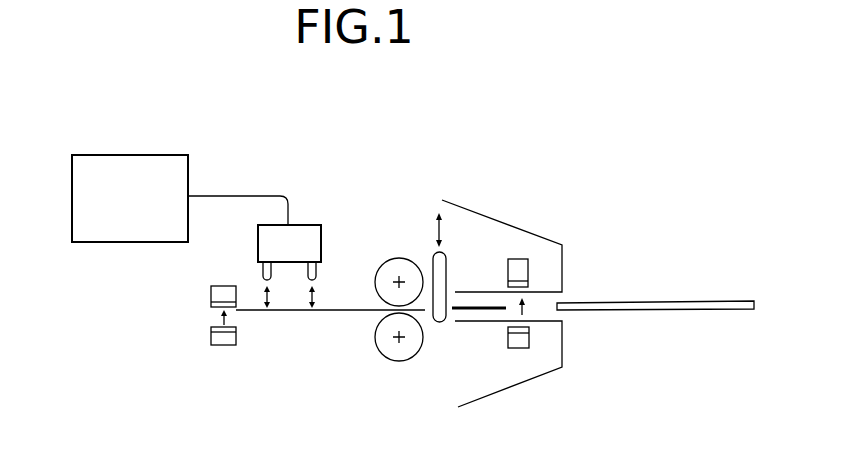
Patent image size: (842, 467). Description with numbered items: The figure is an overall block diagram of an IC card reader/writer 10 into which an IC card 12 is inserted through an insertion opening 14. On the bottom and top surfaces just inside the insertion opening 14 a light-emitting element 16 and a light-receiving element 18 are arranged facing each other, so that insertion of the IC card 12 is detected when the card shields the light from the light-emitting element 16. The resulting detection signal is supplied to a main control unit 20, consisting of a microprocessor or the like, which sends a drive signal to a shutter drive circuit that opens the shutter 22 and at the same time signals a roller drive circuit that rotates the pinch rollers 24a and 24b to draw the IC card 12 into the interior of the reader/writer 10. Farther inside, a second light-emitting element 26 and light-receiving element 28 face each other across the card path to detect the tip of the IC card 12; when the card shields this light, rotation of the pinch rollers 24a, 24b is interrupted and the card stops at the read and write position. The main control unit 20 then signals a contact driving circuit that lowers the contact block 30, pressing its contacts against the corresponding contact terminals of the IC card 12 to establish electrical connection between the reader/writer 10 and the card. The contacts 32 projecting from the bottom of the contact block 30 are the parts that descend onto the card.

The IC card reader/writer 10 is at (356, 194).
The IC card 12 is at (660, 301).
The insertion opening 14 is at (563, 297).
The light-emitting element 16 is at (508, 340).
The light-receiving element 18 is at (527, 258).
The main control unit 20 is at (176, 155).
The shutter 22 is at (447, 266).
The pinch roller 24a is at (385, 358).
The pinch roller 24b is at (398, 258).
The light-emitting element 26 is at (211, 340).
The light-receiving element 28 is at (211, 296).
The contact block 30 is at (260, 244).
The staple drivers 32 is at (317, 272).